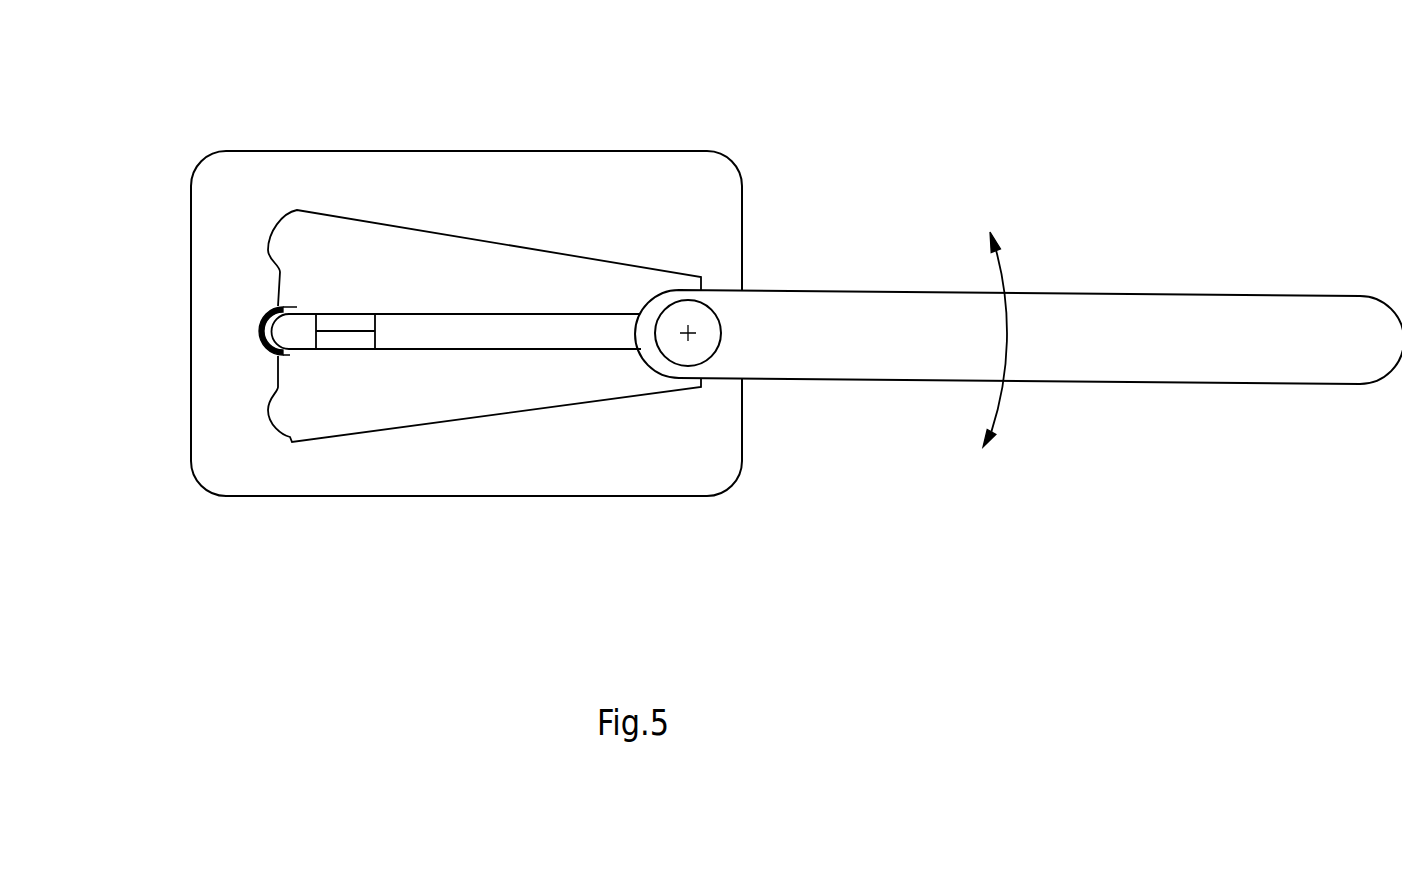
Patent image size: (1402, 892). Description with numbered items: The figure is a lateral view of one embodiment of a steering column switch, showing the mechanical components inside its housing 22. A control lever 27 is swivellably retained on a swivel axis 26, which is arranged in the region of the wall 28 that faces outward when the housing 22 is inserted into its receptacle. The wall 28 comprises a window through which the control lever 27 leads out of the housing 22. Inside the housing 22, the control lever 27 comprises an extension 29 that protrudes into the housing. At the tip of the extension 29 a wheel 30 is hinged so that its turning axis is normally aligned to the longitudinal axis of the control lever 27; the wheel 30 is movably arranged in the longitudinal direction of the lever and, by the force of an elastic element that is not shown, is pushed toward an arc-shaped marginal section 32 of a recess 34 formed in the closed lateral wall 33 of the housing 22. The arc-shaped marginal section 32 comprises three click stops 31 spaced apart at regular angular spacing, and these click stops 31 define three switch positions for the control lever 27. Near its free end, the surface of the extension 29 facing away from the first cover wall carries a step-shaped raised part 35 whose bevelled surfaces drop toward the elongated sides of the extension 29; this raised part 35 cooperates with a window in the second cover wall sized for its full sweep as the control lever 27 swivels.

The housing 22 is at (203, 160).
The swivel axis 26 is at (695, 315).
The control lever 27 is at (1148, 318).
The wall 28 is at (742, 273).
The extension 29 is at (535, 335).
The wheel 30 is at (273, 347).
The click stops 31 is at (275, 395).
The arc-shaped marginal section 32 is at (295, 213).
The closed lateral wall 33 is at (230, 442).
The recess 34 is at (430, 397).
The step-shaped raised part 35 is at (355, 320).